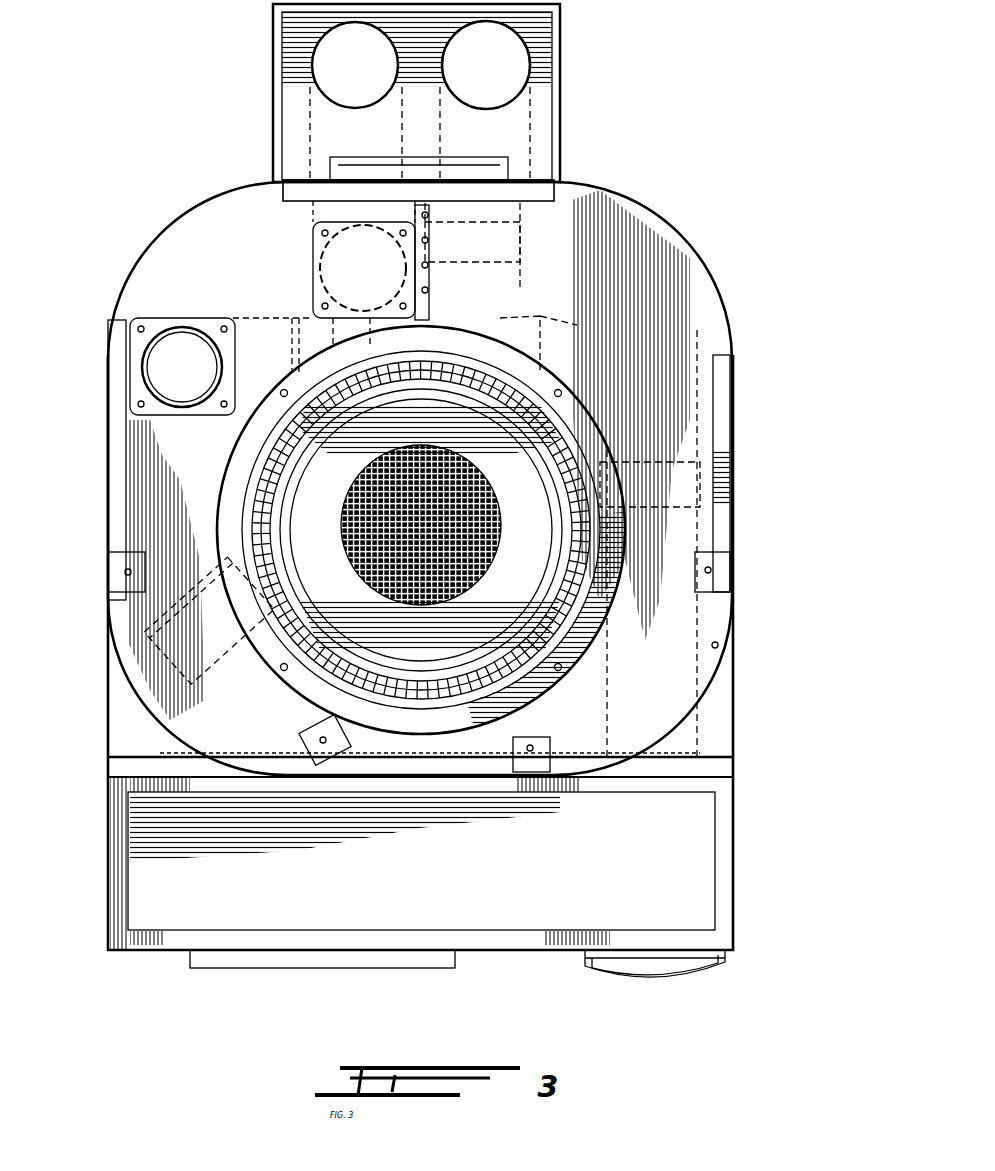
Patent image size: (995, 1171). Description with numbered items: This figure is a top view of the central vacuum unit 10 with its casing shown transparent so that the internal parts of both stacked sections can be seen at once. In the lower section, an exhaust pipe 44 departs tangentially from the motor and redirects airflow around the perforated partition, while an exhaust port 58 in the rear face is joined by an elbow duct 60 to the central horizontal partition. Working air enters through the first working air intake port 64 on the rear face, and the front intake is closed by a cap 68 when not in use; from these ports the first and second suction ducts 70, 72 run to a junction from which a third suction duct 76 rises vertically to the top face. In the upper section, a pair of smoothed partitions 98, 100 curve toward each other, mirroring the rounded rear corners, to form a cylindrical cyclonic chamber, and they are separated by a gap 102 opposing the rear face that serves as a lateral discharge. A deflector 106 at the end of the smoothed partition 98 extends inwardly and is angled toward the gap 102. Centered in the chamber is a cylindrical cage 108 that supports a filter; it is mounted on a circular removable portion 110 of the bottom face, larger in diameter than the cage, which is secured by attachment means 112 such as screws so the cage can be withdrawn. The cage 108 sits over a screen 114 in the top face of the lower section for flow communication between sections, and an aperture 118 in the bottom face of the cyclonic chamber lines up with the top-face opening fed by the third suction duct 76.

The central vacuum unit 10 is at (778, 632).
The exhaust pipe 44 is at (160, 700).
The exhaust port 58 is at (348, 157).
The elbow duct 60 is at (347, 257).
The first working air intake port 64 is at (493, 173).
The cap 68 is at (667, 977).
The first suction duct 70 is at (497, 288).
The second suction duct 72 is at (670, 660).
The third suction duct 76 is at (142, 362).
The smoothed partition 98 is at (108, 780).
The smoothed partition 100 is at (633, 752).
The gap 102 is at (450, 770).
The deflector 106 is at (345, 760).
The cylindrical cage 108 is at (630, 567).
The removable portion 110 is at (650, 497).
The attachment means 112 is at (283, 393).
The screen 114 is at (490, 496).
The aperture 118 is at (182, 415).